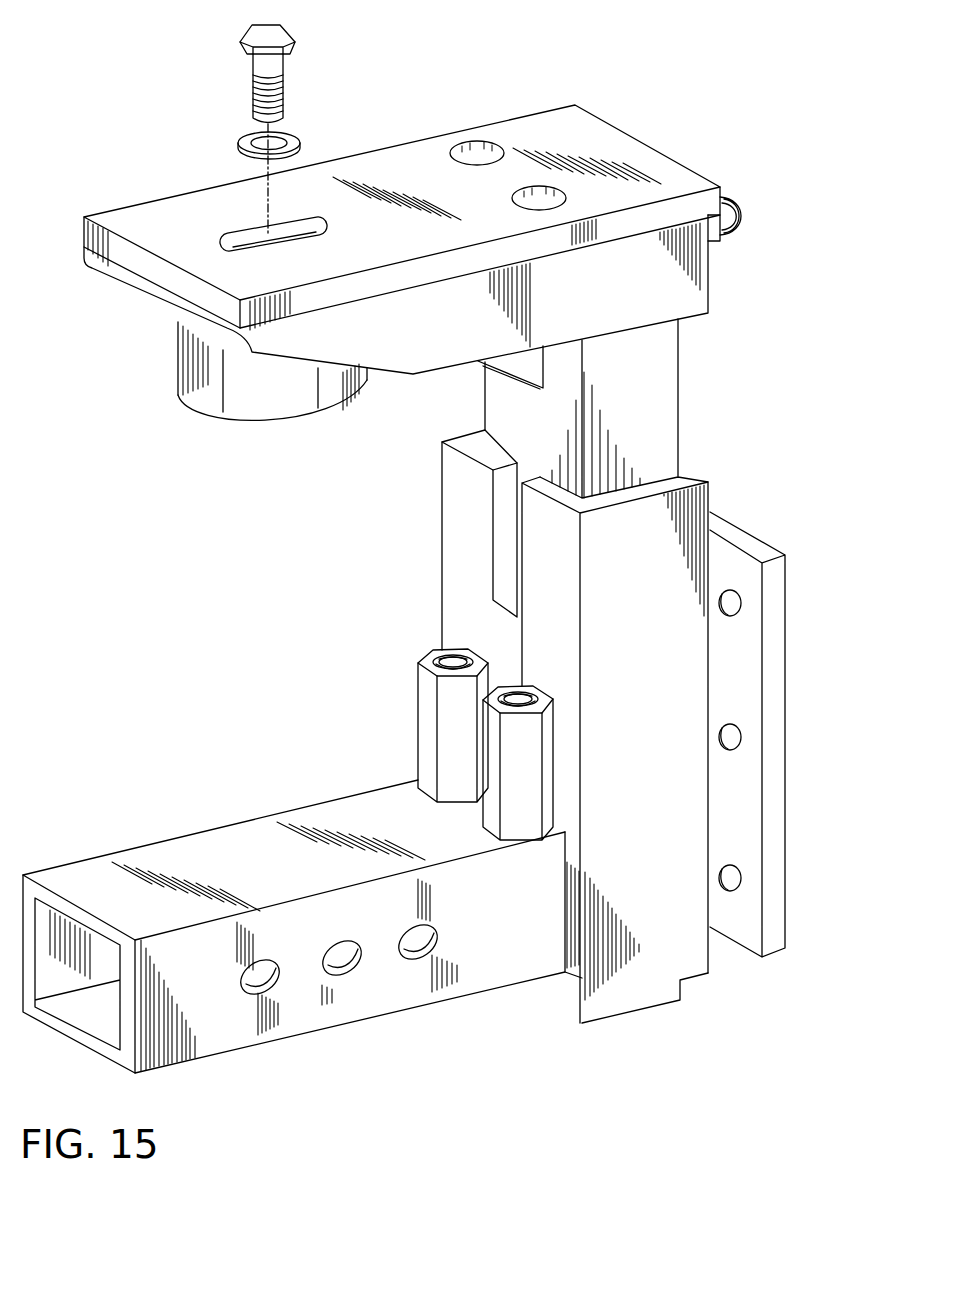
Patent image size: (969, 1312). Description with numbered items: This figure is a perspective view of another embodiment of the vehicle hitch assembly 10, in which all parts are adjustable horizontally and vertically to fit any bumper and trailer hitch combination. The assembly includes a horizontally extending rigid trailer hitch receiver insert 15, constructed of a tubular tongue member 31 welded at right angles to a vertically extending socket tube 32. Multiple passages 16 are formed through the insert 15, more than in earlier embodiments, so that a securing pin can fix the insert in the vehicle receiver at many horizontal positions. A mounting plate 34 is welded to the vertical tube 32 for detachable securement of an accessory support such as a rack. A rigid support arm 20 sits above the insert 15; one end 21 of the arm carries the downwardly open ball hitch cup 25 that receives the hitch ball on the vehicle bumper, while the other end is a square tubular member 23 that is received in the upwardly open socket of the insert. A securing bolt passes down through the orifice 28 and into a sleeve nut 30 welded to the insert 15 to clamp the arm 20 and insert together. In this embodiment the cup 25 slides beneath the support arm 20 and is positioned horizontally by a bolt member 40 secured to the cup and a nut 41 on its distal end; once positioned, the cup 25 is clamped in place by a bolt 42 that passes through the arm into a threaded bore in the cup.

The vehicle hitch assembly 10 is at (226, 595).
The trailer hitch receiver insert 15 is at (410, 992).
The passages 16 is at (253, 983).
The support arm 20 is at (684, 292).
The one end of support arm 21 is at (188, 398).
The vertical tube 23 is at (670, 397).
The ball hitch cup 25 is at (242, 424).
The orifice 28 is at (450, 151).
The sleeve nut 30 is at (428, 720).
The tubular tongue member 31 is at (203, 868).
The socket tube 32 is at (456, 583).
The mounting plate 34 is at (732, 560).
The bolt member 40 is at (742, 206).
The nut 41 is at (714, 250).
The bolt 42 is at (241, 53).